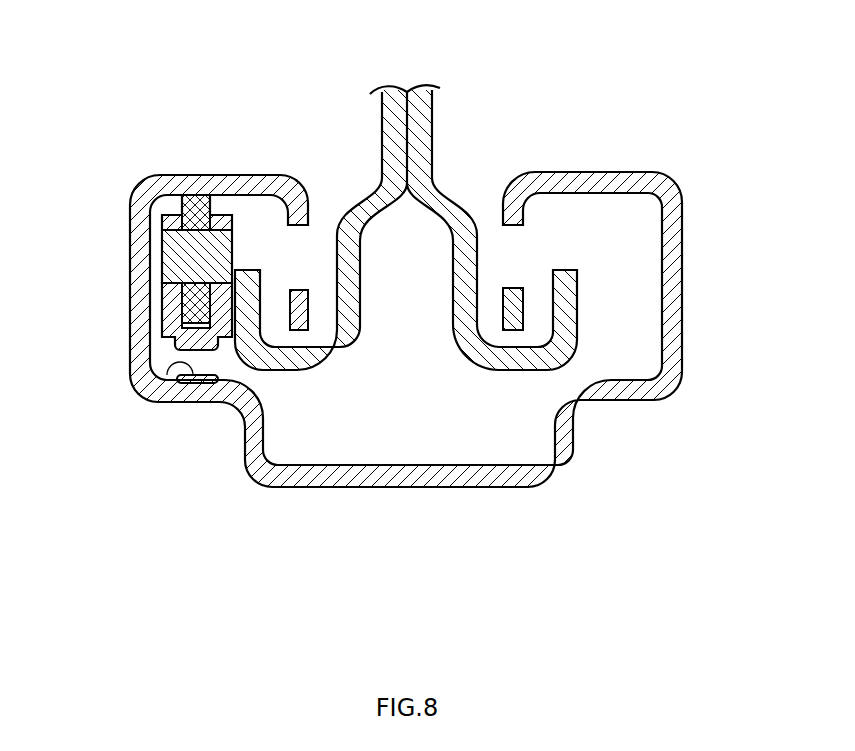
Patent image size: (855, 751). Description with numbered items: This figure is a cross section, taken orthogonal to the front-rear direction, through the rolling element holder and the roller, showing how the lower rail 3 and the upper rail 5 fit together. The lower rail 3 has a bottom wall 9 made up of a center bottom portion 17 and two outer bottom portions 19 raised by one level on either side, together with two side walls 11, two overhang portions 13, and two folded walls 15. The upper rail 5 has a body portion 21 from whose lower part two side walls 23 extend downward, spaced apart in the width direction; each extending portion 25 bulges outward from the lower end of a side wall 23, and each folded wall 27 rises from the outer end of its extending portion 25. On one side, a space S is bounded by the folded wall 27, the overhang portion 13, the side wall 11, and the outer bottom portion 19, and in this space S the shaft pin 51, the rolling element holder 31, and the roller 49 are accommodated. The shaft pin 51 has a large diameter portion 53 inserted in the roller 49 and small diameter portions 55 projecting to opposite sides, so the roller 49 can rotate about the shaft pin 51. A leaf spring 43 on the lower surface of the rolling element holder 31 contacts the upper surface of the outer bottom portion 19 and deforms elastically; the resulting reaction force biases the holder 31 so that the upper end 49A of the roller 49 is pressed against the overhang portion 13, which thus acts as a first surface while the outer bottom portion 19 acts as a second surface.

The lower rail 3 is at (680, 190).
The upper rail 5 is at (382, 123).
The bottom wall 9 is at (404, 505).
The side wall 11 is at (130, 238).
The overhang portion 13 is at (242, 174).
The folded wall 15 is at (308, 290).
The center bottom portion 17 is at (268, 573).
The outer bottom portion 19 is at (175, 403).
The body portion 21 is at (433, 115).
The side wall 23 is at (362, 252).
The extending portion 25 is at (308, 373).
The folded wall 27 is at (262, 284).
The rolling element holder 31 is at (162, 310).
The leaf spring 43 is at (165, 402).
The roller 49 is at (197, 197).
The upper end of the roller 49A is at (193, 203).
The shaft pin 51 is at (231, 249).
The large diameter portion 53 is at (222, 345).
The small diameter portion 55 is at (170, 240).
The space S is at (245, 207).